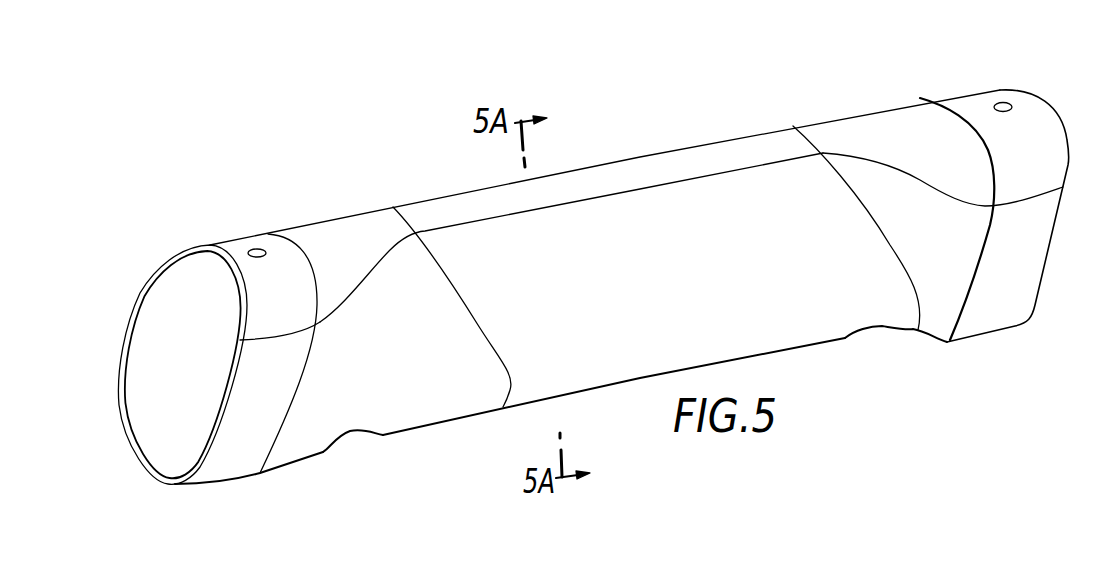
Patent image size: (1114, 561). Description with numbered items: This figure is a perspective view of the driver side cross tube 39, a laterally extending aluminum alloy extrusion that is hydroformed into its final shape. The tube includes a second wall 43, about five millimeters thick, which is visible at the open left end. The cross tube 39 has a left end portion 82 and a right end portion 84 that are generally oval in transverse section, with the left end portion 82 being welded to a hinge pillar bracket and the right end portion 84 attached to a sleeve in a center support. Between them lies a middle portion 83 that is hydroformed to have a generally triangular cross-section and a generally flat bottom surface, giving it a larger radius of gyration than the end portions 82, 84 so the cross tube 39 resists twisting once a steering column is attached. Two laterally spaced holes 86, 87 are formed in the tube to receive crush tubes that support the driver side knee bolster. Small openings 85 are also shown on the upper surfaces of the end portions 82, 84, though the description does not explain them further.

The driver side cross tube 39 is at (638, 122).
The second wall 43 is at (163, 263).
The left end portion 82 is at (224, 478).
The middle portion 83 is at (800, 323).
The right end portion 84 is at (1003, 310).
The mounting holes 85 is at (256, 248).
The hole 86 is at (352, 435).
The hole 87 is at (877, 330).